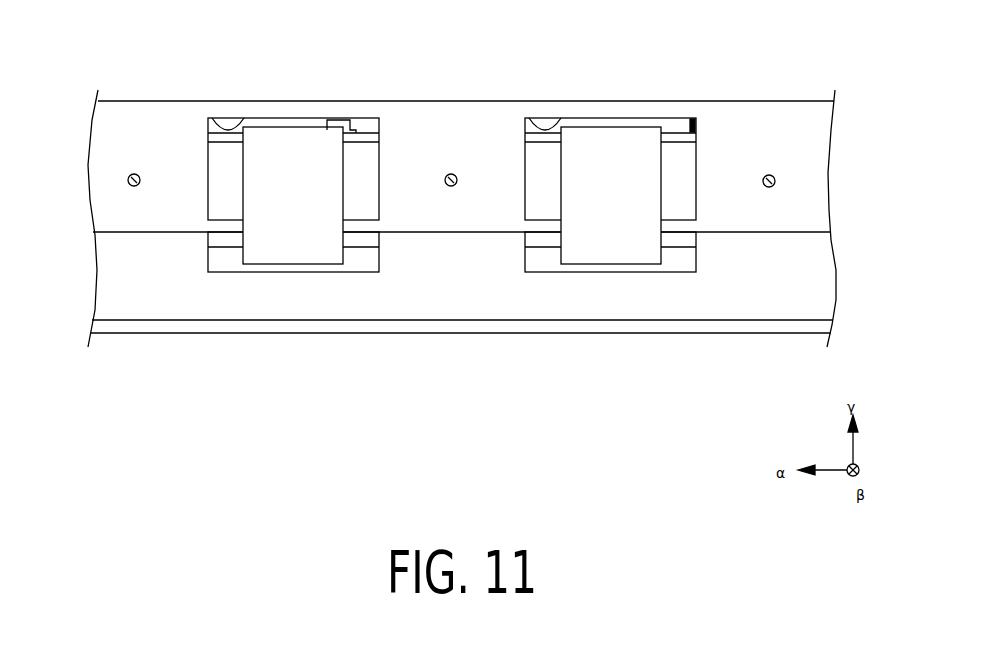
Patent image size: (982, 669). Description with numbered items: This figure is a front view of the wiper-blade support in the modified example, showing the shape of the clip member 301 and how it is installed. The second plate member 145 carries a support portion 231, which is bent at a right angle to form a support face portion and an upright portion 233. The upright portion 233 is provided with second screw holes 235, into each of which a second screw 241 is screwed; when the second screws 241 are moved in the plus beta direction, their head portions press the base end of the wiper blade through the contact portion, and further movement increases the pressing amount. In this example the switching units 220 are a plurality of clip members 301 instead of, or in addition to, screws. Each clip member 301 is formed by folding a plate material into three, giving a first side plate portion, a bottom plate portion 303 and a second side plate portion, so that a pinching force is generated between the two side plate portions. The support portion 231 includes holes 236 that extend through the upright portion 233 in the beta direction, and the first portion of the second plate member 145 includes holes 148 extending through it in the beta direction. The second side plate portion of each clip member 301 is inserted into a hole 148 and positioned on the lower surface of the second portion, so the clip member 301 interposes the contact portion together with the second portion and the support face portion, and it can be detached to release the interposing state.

The second plate member 145 is at (110, 271).
The hole 148 is at (352, 273).
The switching unit 220 is at (452, 119).
The support portion 231 is at (829, 171).
The upright portion 233 is at (808, 192).
The second screw hole 235 is at (139, 185).
The hole 236 is at (240, 118).
The second screw 241 is at (132, 175).
The clip member 301 is at (286, 126).
The bottom plate portion 303 is at (313, 143).